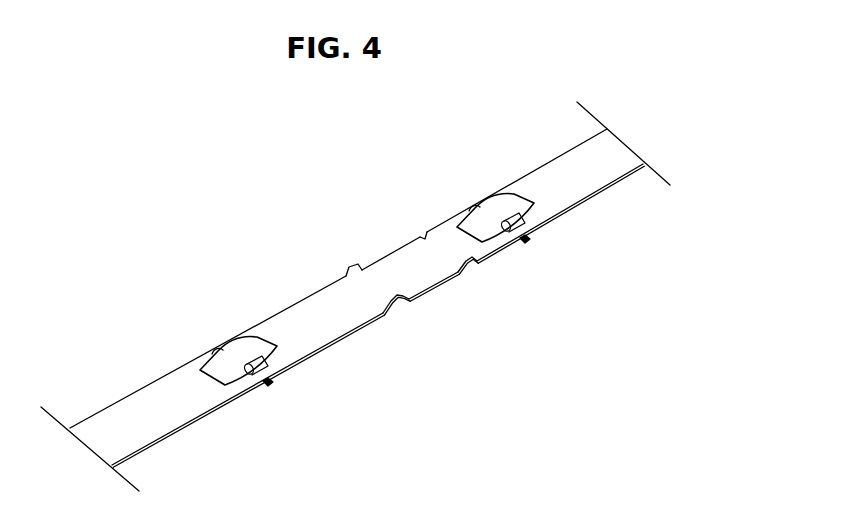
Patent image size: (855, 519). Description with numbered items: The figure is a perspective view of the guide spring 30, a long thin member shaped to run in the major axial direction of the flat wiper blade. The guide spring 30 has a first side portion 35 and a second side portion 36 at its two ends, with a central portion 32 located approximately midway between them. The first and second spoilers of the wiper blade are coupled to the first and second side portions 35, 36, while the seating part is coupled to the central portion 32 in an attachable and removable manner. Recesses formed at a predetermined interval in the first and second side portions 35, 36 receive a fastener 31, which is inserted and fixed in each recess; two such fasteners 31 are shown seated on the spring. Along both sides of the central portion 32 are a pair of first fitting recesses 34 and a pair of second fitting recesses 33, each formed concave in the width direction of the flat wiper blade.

The guide spring 30 is at (372, 257).
The fastener 31 is at (237, 352).
The central portion 32 is at (349, 308).
The second fitting recess 33 is at (420, 236).
The first fitting recess 34 is at (347, 278).
The first side portion 35 is at (580, 175).
The second side portion 36 is at (162, 407).